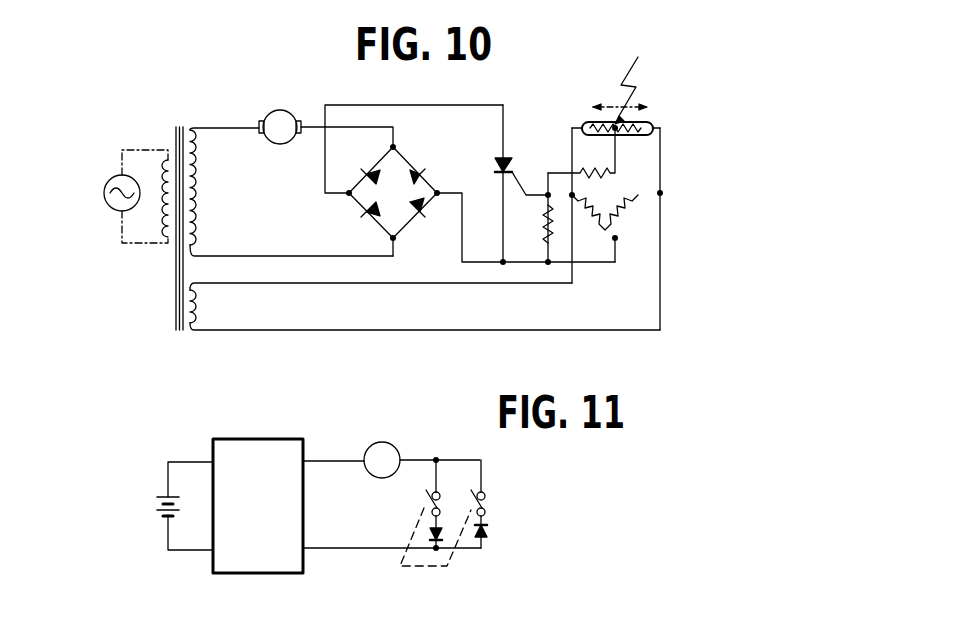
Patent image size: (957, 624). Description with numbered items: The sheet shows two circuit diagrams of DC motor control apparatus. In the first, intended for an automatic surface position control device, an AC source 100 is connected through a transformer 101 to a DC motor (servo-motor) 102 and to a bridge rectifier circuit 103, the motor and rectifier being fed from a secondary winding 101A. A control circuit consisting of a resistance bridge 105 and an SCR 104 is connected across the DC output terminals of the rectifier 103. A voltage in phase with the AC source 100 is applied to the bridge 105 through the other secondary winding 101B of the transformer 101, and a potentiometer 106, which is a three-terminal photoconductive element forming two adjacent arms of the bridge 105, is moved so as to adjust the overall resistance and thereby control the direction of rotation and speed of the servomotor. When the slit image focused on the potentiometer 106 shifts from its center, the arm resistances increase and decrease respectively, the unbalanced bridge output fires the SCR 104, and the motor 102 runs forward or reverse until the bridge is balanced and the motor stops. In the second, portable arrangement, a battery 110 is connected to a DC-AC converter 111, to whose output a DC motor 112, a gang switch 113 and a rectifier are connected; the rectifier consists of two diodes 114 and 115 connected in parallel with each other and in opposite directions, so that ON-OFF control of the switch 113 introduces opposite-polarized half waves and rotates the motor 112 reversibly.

In FIG. 10, the AC source 100 is at (108, 186).
In FIG. 10, the transformer 101 is at (411, 210).
In FIG. 10, the secondary winding of transformer 101A is at (204, 192).
In FIG. 10, the secondary winding 101B is at (204, 302).
In FIG. 10, the DC motor (servo-motor) 102 is at (273, 110).
In FIG. 10, the bridge rectifier circuit 103 is at (410, 201).
In FIG. 10, the SCR 104 is at (506, 158).
In FIG. 10, the resistance bridge 105 is at (635, 207).
In FIG. 10, the potentiometer 106 is at (652, 122).
In FIG. 11, the battery 110 is at (160, 498).
In FIG. 11, the DC-AC converter 111 is at (248, 438).
In FIG. 11, the DC motor 112 is at (385, 442).
In FIG. 11, the gang switch 113 is at (418, 566).
In FIG. 11, the diode 114 is at (442, 546).
In FIG. 11, the diode 115 is at (486, 531).